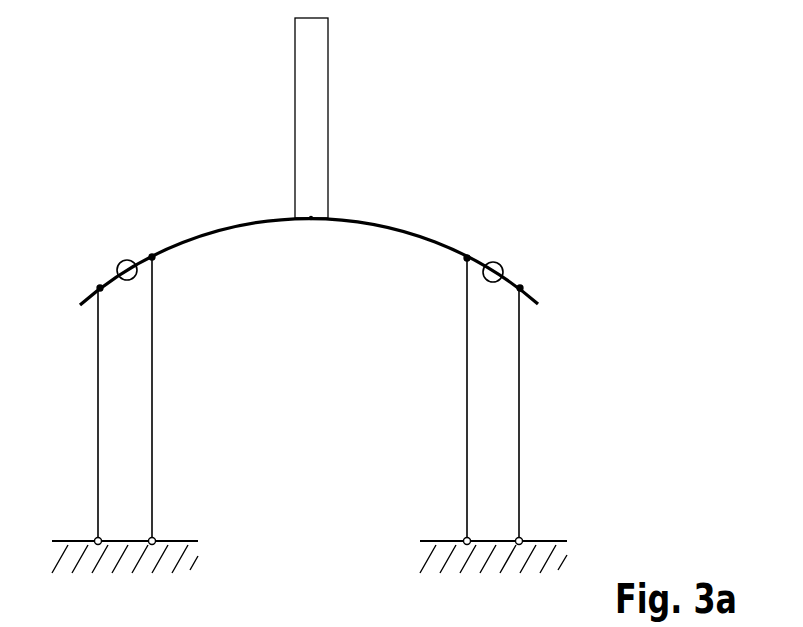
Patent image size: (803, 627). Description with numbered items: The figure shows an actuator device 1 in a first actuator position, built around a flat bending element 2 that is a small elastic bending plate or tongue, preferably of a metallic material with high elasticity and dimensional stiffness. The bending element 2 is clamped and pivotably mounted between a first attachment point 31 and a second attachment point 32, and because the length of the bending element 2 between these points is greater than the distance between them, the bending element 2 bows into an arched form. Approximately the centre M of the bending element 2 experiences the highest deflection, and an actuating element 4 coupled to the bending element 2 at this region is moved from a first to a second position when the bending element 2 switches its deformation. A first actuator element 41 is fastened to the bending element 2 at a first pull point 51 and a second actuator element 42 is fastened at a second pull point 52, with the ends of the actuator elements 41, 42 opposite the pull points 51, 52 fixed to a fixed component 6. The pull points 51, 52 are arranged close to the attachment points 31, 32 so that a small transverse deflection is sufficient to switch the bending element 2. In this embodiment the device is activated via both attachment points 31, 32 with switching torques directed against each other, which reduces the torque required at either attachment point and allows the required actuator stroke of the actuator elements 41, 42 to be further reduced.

The actuator device 1 is at (583, 104).
The bending element 2 is at (413, 233).
The actuating element 4 is at (316, 100).
The centre of the bending element M is at (310, 221).
The first attachment point 31 is at (122, 262).
The second attachment point 32 is at (498, 264).
The first actuator element 41 is at (155, 415).
The second actuator element 42 is at (96, 409).
The first pull point 51 is at (152, 255).
The second pull point 52 is at (100, 287).
The fixed component 6 is at (177, 540).